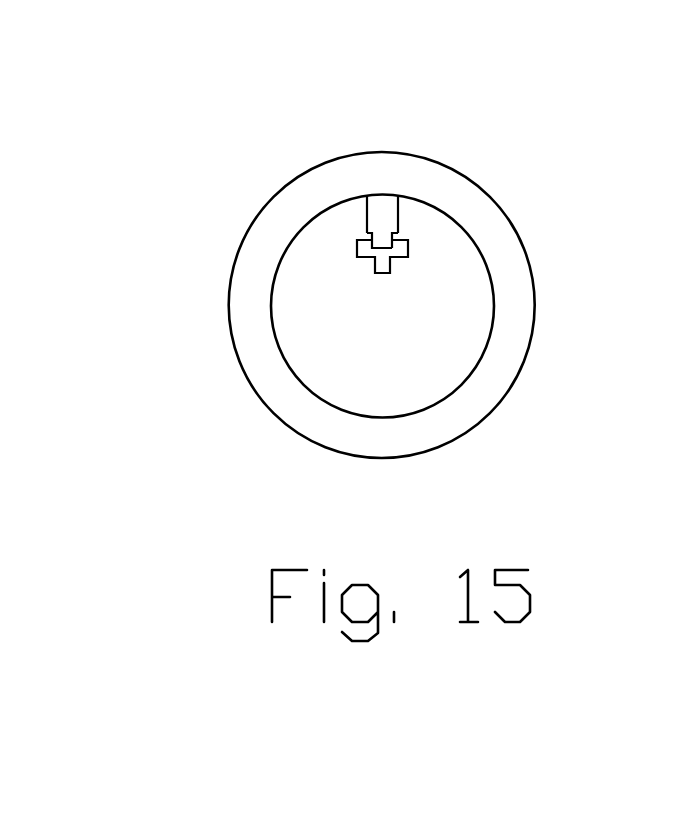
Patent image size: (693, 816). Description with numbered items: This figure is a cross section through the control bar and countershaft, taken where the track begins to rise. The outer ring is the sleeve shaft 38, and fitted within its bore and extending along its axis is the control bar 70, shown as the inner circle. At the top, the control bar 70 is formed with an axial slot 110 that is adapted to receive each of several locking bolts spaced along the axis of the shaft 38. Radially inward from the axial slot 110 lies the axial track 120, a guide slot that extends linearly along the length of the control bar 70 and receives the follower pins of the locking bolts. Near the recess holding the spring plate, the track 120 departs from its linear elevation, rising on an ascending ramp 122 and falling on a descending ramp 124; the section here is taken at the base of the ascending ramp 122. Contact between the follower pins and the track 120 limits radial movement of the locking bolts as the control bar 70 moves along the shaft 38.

The sleeve shaft 38 is at (458, 410).
The control bar 70 is at (385, 393).
The axial slot 110 is at (367, 212).
The axial track 120 is at (407, 248).
The ascending ramp 122 is at (396, 238).
The descending ramp 124 is at (527, 158).